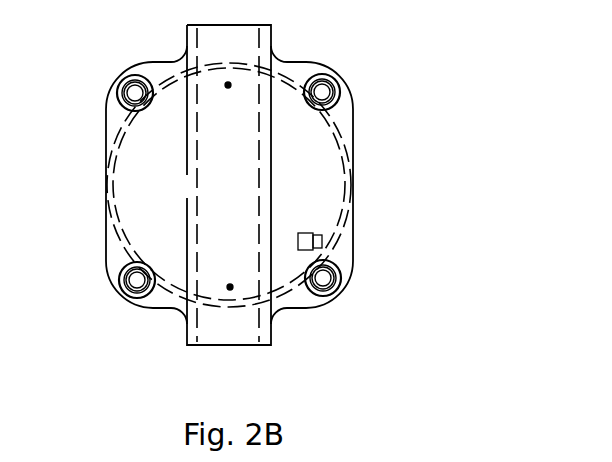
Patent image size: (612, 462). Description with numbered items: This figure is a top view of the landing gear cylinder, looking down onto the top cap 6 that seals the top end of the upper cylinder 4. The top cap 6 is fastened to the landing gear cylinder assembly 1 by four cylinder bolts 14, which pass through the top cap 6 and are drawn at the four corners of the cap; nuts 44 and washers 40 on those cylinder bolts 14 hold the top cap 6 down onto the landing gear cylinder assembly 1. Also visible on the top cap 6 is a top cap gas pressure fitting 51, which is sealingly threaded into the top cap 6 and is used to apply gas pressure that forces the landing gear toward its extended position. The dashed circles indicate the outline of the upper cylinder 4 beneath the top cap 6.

The landing gear cylinder assembly 1 is at (285, 185).
The upper cylinder 4 is at (112, 145).
The top cap 6 is at (353, 128).
The cylinder bolts 14 is at (424, 302).
The nuts 44 is at (424, 302).
The washers 40 is at (343, 287).
The top cap gas pressure fitting 51 is at (322, 238).